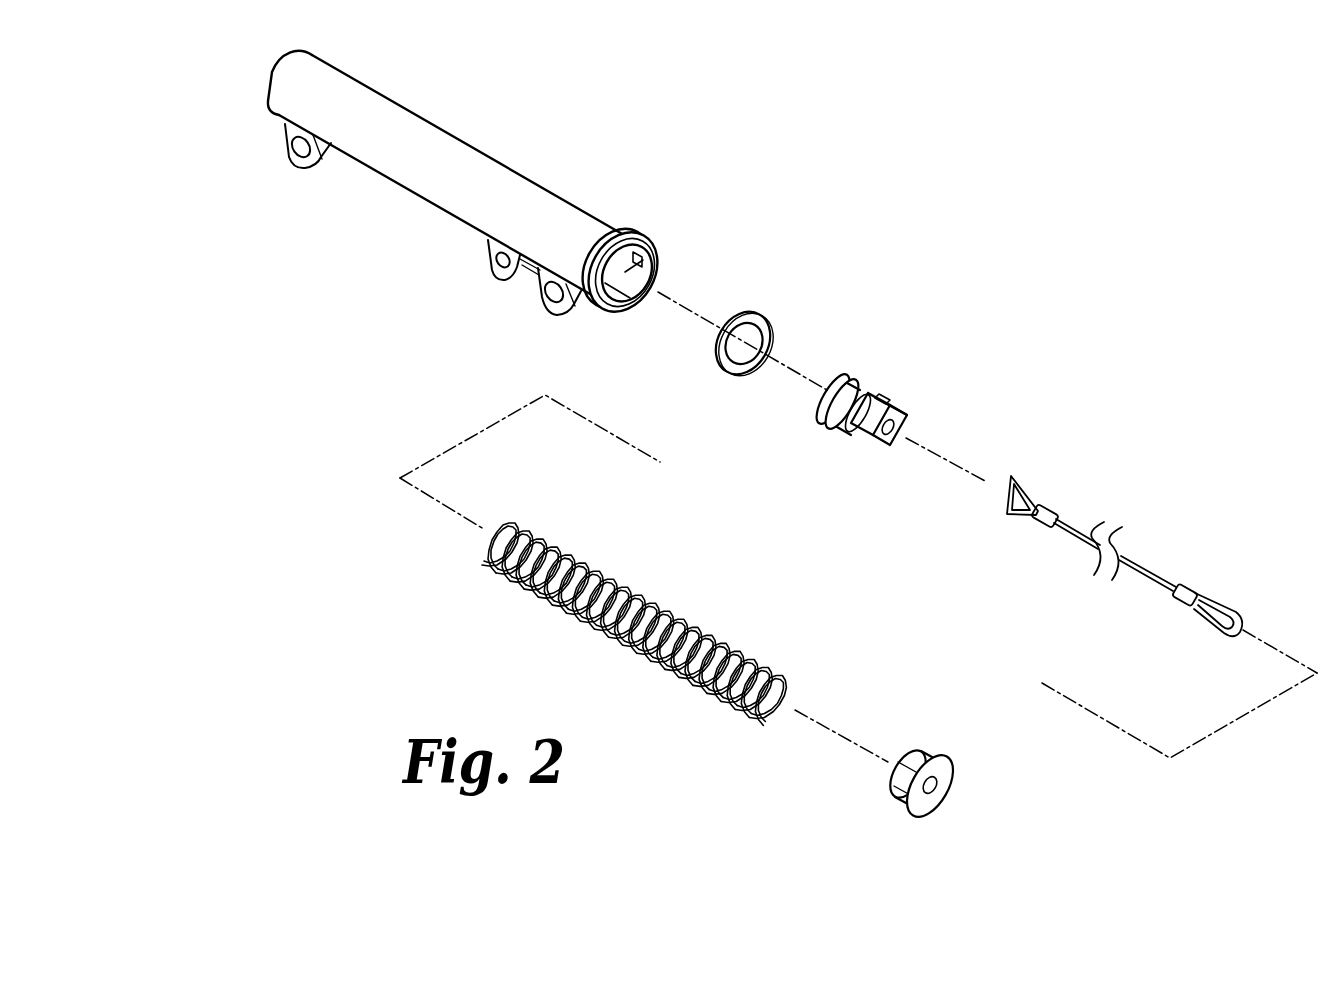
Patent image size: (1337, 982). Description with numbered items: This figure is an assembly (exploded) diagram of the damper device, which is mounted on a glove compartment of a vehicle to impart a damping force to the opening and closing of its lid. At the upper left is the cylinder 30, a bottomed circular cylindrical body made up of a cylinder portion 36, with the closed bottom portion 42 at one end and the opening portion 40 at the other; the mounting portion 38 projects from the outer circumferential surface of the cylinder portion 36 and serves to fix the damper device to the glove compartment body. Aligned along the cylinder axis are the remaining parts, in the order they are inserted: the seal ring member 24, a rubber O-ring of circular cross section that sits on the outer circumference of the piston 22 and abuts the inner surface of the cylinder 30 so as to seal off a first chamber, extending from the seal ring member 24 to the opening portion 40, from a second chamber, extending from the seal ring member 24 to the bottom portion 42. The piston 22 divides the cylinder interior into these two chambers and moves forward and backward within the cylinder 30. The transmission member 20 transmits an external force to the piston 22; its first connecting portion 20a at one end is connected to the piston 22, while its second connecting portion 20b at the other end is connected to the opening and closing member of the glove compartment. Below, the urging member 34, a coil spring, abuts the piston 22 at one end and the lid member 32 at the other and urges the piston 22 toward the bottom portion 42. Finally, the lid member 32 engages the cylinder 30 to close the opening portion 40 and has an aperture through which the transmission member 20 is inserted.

The transmission member 20 is at (1143, 523).
The first connecting portion 20a is at (1012, 476).
The second connecting portion 20b is at (1243, 612).
The piston 22 is at (885, 392).
The seal ring member 24 is at (750, 310).
The cylinder 30 is at (466, 187).
The lid member 32 is at (928, 752).
The urging member 34 is at (645, 590).
The cylinder portion 36 is at (400, 125).
The mounting portion 38 is at (487, 262).
The opening portion 40 is at (653, 253).
The bottom portion 42 is at (272, 73).